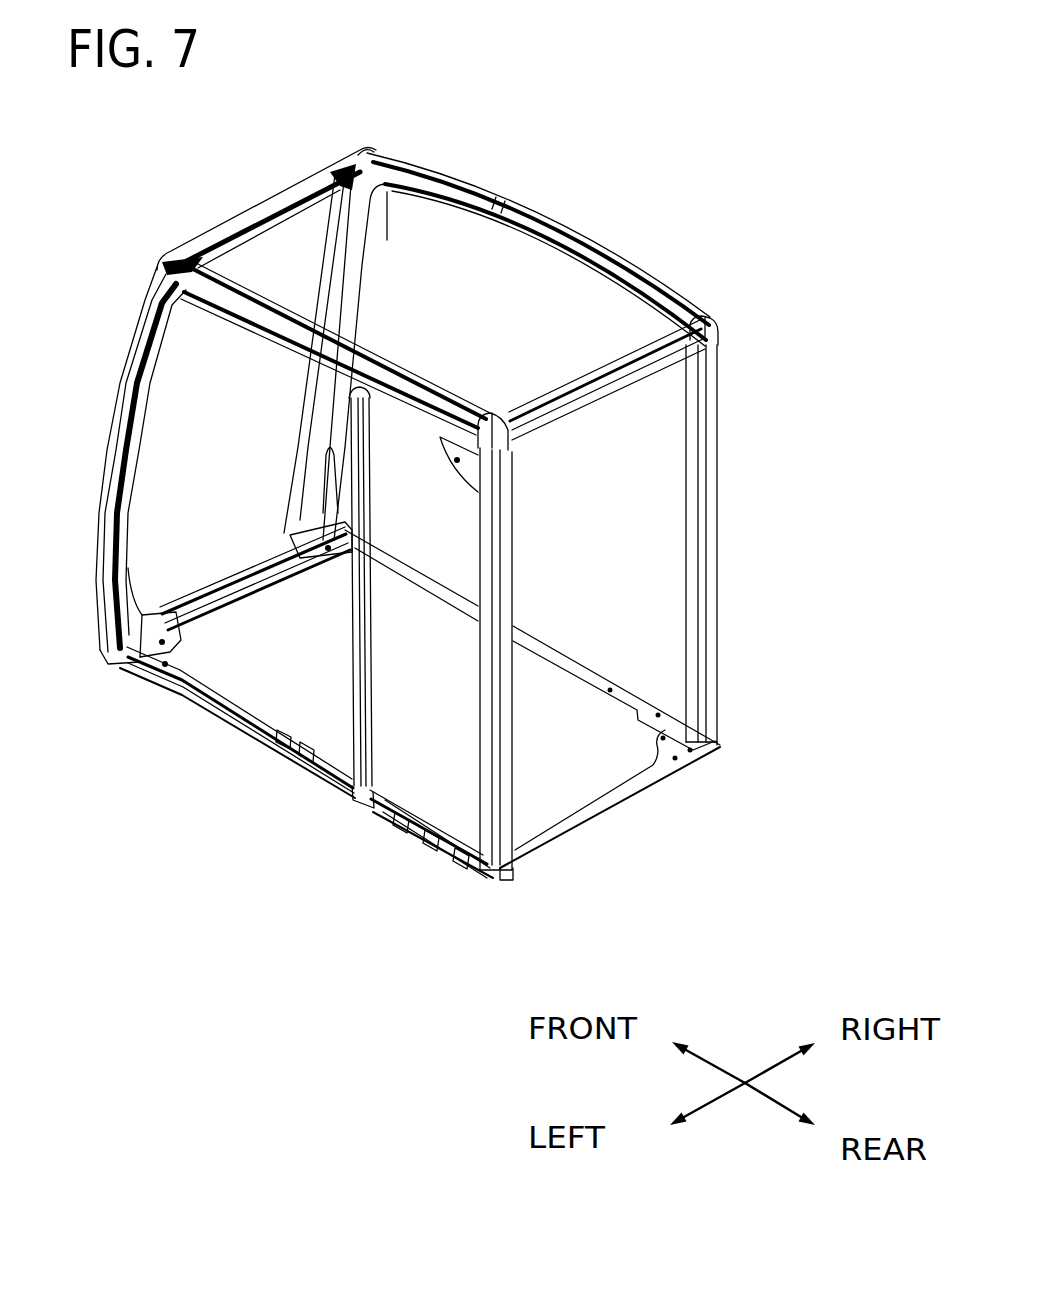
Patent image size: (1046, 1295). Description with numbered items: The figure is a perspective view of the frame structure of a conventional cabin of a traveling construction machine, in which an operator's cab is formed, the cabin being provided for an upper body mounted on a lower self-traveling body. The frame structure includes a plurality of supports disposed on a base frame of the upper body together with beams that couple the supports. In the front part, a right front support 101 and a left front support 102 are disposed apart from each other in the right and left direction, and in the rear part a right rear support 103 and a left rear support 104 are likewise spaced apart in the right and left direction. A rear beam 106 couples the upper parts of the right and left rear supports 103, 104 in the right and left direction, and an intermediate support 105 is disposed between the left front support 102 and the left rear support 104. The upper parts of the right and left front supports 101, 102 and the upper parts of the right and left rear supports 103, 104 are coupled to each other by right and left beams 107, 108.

The right front support 101 is at (363, 237).
The left front support 102 is at (148, 413).
The right rear support 103 is at (710, 437).
The left rear support 104 is at (507, 530).
The intermediate support 105 is at (373, 667).
The rear beam 106 is at (552, 433).
The right beam 107 is at (577, 233).
The left beam 108 is at (410, 371).